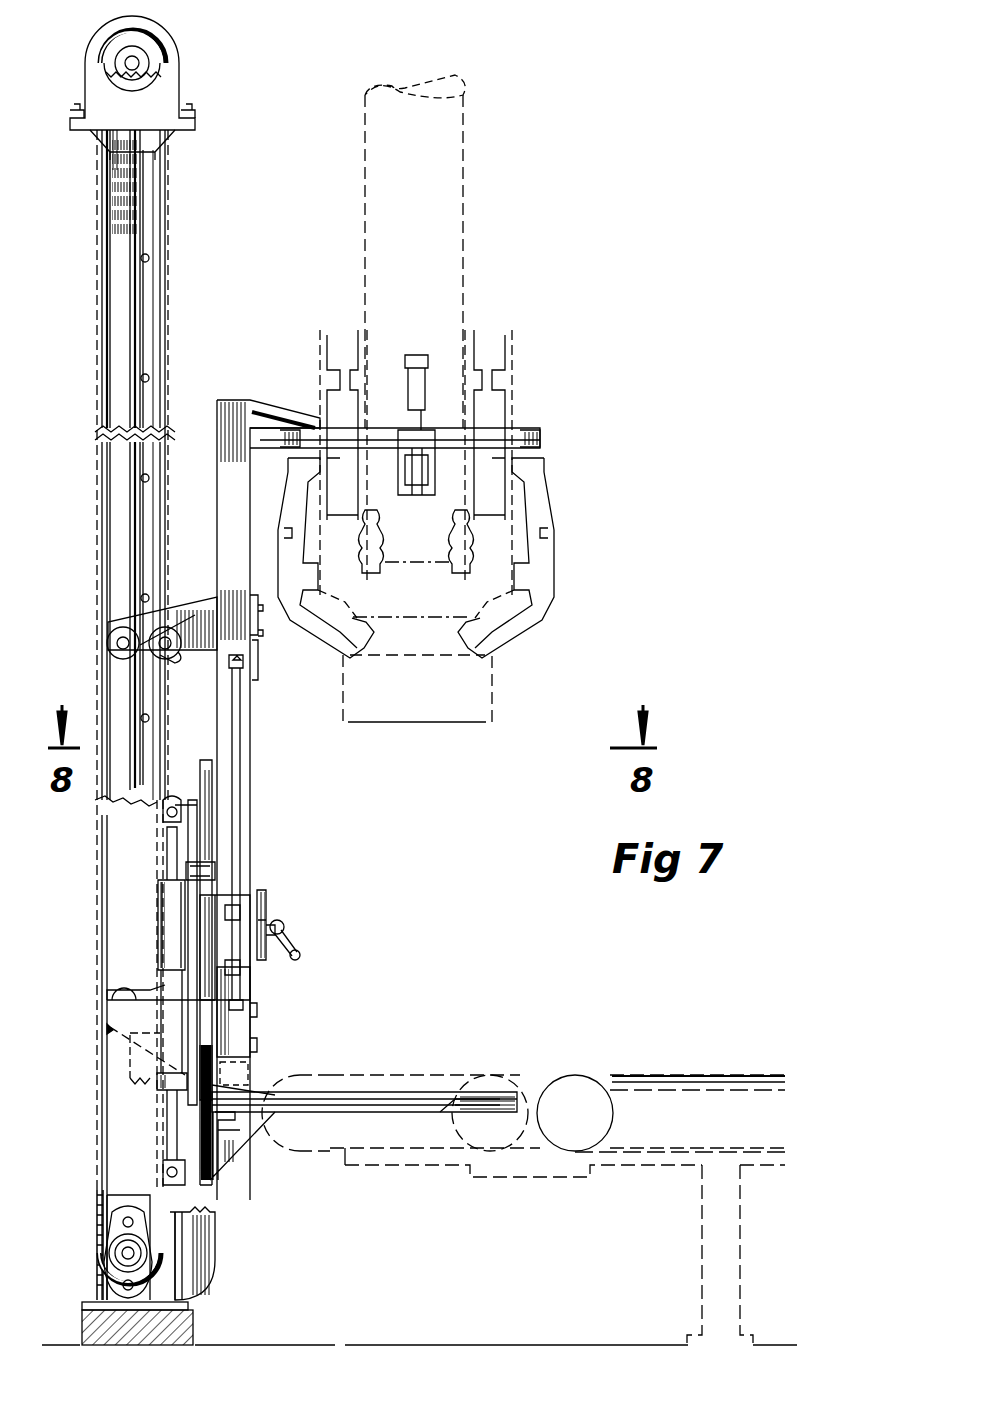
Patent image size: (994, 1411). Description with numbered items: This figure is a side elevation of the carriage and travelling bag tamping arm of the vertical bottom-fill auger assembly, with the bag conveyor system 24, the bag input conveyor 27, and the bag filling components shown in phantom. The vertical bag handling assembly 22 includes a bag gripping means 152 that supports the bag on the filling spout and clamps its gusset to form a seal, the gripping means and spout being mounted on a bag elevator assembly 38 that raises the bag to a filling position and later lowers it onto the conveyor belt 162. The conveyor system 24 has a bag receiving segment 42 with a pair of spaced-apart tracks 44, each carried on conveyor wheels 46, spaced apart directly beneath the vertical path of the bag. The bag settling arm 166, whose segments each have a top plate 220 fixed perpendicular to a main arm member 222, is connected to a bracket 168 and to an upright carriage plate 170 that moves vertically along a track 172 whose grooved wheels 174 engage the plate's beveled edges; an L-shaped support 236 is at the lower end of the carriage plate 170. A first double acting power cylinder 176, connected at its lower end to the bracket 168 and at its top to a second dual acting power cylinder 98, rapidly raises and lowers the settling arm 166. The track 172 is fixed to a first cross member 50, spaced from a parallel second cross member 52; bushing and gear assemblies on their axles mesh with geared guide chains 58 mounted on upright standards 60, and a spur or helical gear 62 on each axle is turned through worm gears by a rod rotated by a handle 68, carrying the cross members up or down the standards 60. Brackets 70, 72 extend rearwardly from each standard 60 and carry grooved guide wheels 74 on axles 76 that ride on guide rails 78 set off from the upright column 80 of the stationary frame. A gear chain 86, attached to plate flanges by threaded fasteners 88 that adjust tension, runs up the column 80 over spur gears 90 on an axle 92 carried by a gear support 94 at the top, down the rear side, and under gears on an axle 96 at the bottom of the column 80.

The vertical bag handling assembly 22 is at (385, 857).
The bag conveyor system 24 is at (703, 1078).
The bag input conveyor 27 is at (412, 662).
The bag elevator assembly 38 is at (180, 772).
The bag receiving segment 42 is at (406, 1078).
The spaced-apart tracks 44 is at (375, 1152).
The conveyor wheels 46 is at (490, 1082).
The first cross member 50 is at (207, 925).
The second cross member 52 is at (255, 968).
The geared guide chains 58 is at (242, 695).
The upright standards 60 is at (232, 400).
The spur or helical gear 62 is at (268, 897).
The handle 68 is at (300, 950).
The bracket 70 is at (110, 1030).
The bracket 72 is at (118, 628).
The grooved guide wheels 74 is at (195, 585).
The axles 76 is at (160, 650).
The guide rails 78 is at (148, 308).
The upright column 80 is at (118, 262).
The gear chain 86 is at (150, 42).
The threaded fastener 88 is at (170, 660).
The spur gears 90 is at (146, 98).
The axle 92 is at (138, 65).
The gear support 94 is at (88, 96).
The axle 96 is at (125, 1265).
The second dual acting power cylinder 98 is at (160, 902).
The bag gripping means 152 is at (600, 400).
The conveyor belt 162 is at (760, 1075).
The bag settling arm 166 is at (410, 1118).
The bracket 168 is at (248, 1090).
The upright carriage plate 170 is at (210, 760).
The track 172 is at (197, 832).
The grooved wheels 174 is at (210, 870).
The first double acting power cylinder 176 is at (162, 1056).
The top plate 220 is at (385, 1092).
The main arm member 222 is at (463, 1112).
The L-shaped support 236 is at (220, 1205).